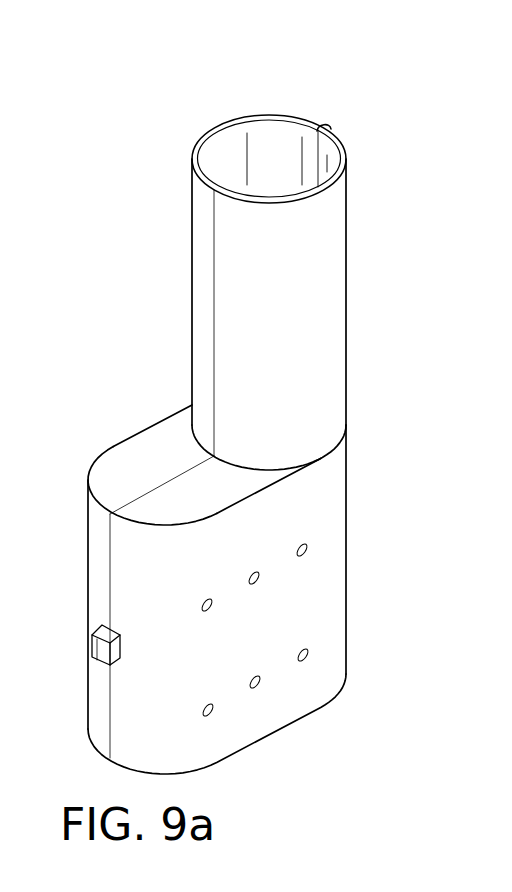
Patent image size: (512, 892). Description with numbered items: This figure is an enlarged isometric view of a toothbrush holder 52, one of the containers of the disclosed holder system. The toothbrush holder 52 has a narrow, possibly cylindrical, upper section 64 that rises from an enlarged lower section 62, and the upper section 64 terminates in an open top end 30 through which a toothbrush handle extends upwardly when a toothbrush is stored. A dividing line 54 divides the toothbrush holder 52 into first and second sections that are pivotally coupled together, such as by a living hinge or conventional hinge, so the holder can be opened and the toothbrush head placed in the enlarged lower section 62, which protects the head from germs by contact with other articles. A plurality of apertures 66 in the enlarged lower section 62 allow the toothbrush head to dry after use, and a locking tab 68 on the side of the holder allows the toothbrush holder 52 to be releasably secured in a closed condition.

The open top end 30 is at (243, 117).
The toothbrush holder 52 is at (385, 254).
The dividing line 54 is at (140, 500).
The enlarged lower section 62 is at (393, 583).
The upper section 64 is at (347, 350).
The apertures 66 is at (300, 660).
The locking tab 68 is at (93, 637).